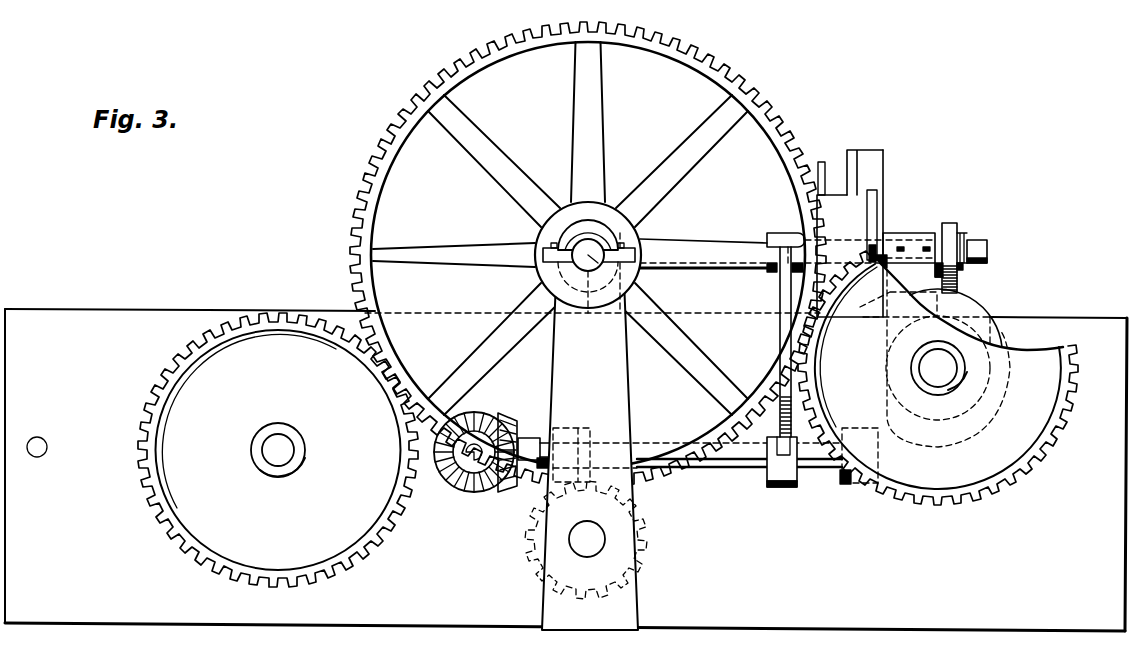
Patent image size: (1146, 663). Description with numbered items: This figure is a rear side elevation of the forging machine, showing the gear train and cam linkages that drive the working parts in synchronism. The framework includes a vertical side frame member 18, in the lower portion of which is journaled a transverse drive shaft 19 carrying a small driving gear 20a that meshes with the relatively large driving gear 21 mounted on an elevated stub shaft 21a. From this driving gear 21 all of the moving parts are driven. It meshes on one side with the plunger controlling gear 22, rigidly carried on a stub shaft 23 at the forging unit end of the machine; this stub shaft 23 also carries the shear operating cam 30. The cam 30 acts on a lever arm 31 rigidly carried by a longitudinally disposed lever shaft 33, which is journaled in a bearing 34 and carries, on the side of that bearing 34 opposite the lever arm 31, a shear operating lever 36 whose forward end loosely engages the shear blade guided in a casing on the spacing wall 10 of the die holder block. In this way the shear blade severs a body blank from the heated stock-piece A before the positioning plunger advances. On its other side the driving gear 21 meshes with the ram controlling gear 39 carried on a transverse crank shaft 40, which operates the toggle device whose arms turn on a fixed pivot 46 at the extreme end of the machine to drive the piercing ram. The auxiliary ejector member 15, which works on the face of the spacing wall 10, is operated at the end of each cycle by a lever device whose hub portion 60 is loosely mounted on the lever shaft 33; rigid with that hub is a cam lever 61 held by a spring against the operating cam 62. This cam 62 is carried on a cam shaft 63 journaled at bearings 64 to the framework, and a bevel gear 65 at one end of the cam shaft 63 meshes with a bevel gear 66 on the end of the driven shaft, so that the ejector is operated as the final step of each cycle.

The spacing wall 10 is at (850, 233).
The auxiliary ejector member 15 is at (817, 161).
The vertical side frame member 18 is at (566, 470).
The drive shaft 19 is at (587, 541).
The driving gear 20a is at (527, 535).
The driving gear 21 is at (376, 203).
The stub shaft 21a is at (628, 268).
The plunger controlling gear 22 is at (938, 378).
The stub shaft 23 is at (933, 368).
The shear operating cam 30 is at (960, 308).
The lever arm 31 is at (952, 223).
The lever shaft 33 is at (739, 240).
The bearing 34 is at (921, 233).
The shear operating lever 36 is at (881, 212).
The ram controlling gear 39 is at (278, 450).
The crank shaft 40 is at (280, 443).
The fixed pivot 46 is at (45, 440).
The hub portion 60 is at (781, 233).
The cam lever 61 is at (783, 340).
The operating cam 62 is at (780, 486).
The cam shaft 63 is at (732, 466).
The bearing 64 is at (578, 437).
The bevel gear 65 is at (512, 489).
The bevel gear 66 is at (442, 483).
The stock-piece A is at (868, 173).